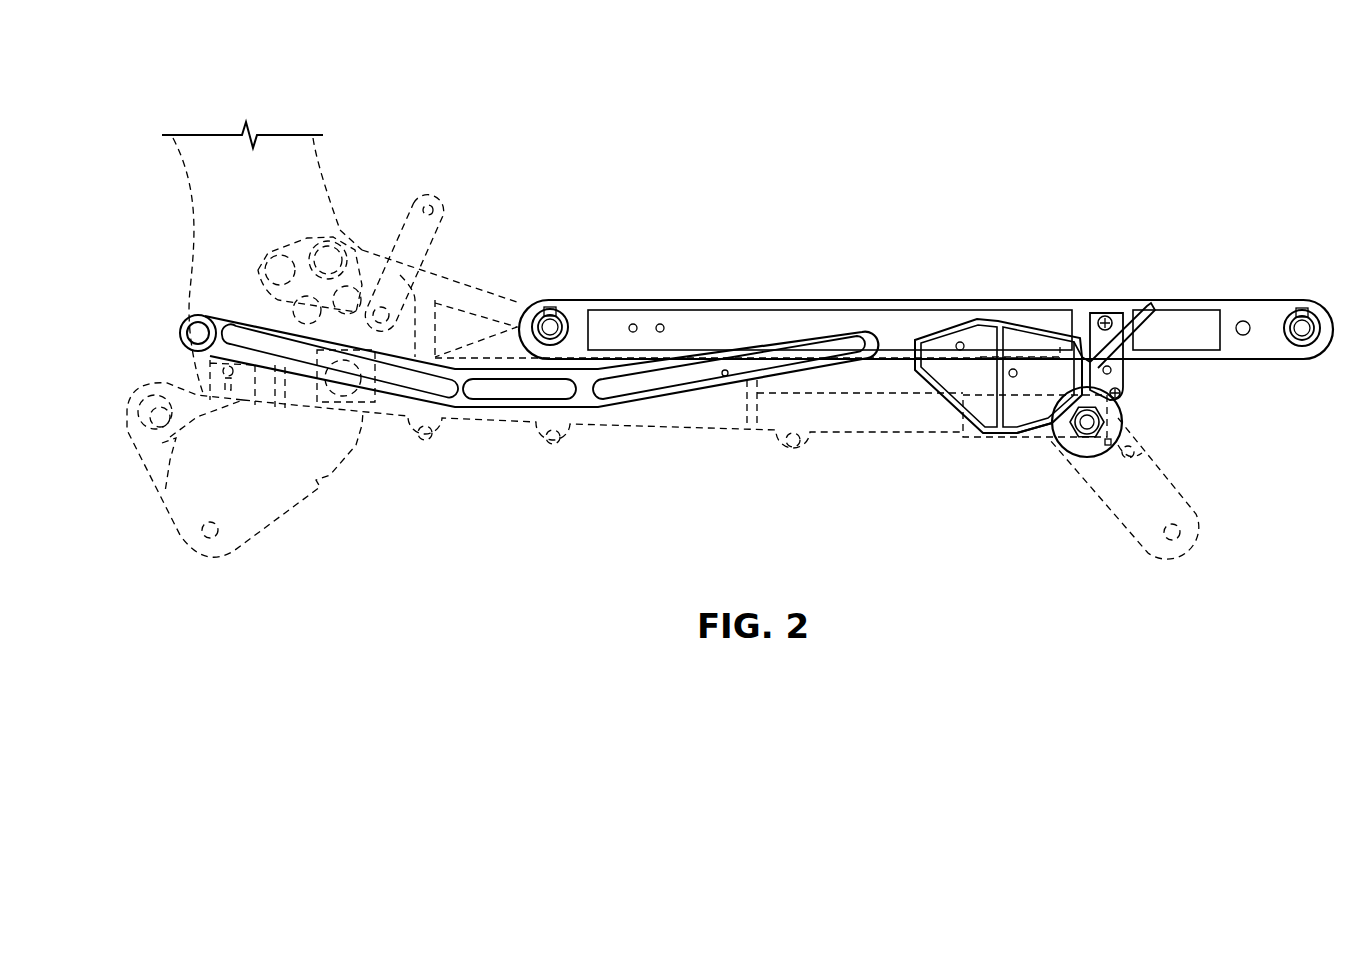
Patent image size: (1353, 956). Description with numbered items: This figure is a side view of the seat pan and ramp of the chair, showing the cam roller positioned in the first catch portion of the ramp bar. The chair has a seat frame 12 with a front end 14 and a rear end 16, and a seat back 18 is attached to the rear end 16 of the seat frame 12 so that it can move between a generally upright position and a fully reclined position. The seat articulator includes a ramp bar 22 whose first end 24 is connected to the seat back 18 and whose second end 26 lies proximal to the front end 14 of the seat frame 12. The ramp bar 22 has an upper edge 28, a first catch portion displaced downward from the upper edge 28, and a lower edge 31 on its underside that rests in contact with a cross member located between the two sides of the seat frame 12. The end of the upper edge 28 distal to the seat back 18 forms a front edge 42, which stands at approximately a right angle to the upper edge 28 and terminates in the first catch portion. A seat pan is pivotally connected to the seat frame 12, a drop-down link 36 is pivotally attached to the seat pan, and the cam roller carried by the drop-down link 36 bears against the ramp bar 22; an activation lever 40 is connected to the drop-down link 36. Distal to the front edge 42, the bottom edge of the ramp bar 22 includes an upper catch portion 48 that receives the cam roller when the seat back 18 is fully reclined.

The seat frame 12 is at (499, 428).
The front end 14 is at (1143, 446).
The rear end 16 is at (125, 397).
The seat back 18 is at (320, 183).
The ramp bar 22 is at (867, 368).
The first end 24 is at (181, 329).
The second end 26 is at (1092, 315).
The upper edge 28 is at (1013, 318).
The lower edge 31 is at (1005, 445).
The drop-down link 36 is at (1094, 300).
The activation lever 40 is at (1120, 335).
The front edge 42 is at (1075, 343).
The upper catch portion 48 is at (897, 325).